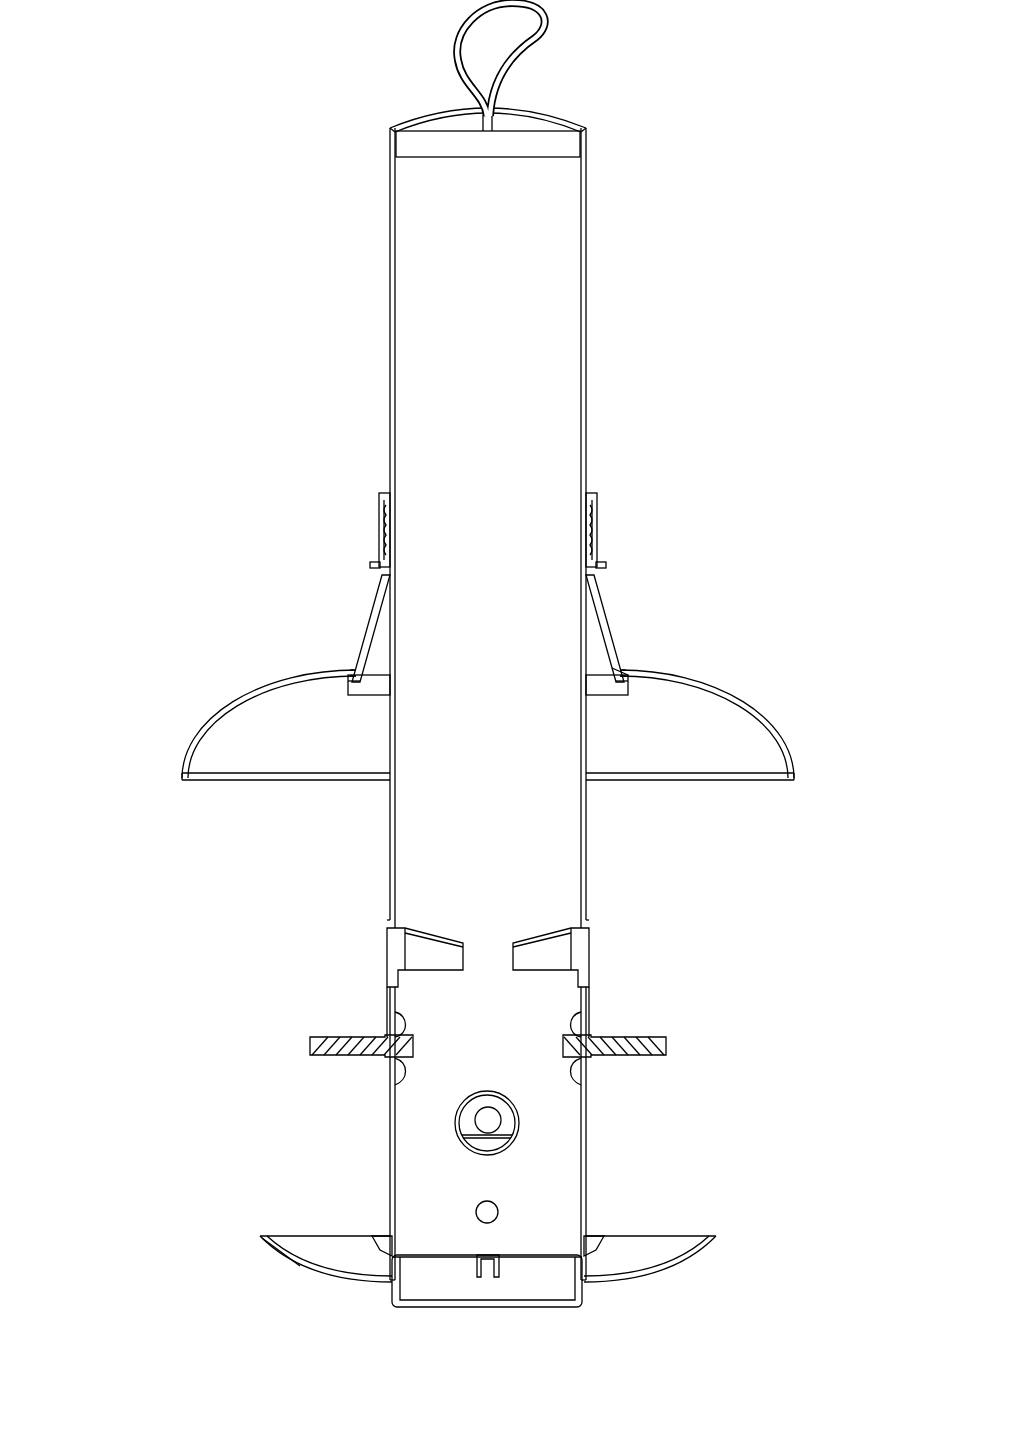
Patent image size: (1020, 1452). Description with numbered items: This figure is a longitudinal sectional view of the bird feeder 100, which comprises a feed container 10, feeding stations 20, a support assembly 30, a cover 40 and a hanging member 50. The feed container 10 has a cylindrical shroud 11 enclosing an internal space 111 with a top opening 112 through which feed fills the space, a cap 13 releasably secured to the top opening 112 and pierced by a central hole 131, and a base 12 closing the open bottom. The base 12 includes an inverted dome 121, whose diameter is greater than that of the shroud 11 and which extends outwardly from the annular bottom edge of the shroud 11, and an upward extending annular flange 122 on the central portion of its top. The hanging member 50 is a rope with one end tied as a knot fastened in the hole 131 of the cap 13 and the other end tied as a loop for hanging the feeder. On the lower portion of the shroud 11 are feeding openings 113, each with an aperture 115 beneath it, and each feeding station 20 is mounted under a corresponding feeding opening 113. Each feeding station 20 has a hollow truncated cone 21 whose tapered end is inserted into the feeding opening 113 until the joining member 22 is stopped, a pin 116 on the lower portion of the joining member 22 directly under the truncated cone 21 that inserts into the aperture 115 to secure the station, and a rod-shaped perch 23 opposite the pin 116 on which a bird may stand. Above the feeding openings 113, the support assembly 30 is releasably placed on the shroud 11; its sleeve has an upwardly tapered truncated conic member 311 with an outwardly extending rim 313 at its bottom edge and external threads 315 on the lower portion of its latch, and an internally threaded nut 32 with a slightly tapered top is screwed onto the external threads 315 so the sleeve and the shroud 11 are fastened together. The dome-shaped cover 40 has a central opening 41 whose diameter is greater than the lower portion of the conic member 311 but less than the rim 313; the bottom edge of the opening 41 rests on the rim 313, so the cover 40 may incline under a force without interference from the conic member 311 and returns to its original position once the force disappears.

The bird feeder 100 is at (162, 130).
The feed container 10 is at (250, 315).
The cylindrical shroud 11 is at (390, 295).
The internal space 111 is at (553, 350).
The top opening 112 is at (440, 132).
The feeding opening 113 is at (420, 962).
The aperture 115 is at (400, 1085).
The pin 116 is at (400, 1020).
The base 12 is at (672, 1275).
The inverted dome 121 is at (302, 1268).
The annular flange 122 is at (395, 1262).
The cap 13 is at (440, 120).
The hole 131 is at (492, 117).
The hanging member 50 is at (540, 35).
The support assembly 30 is at (657, 478).
The internally threaded nut 32 is at (592, 542).
The external threads 315 is at (385, 545).
The truncated conic member 311 is at (375, 615).
The rim 313 is at (635, 680).
The cover 40 is at (272, 683).
The central opening 41 is at (620, 655).
The feeding station 20 is at (745, 873).
The truncated cone 21 is at (548, 937).
The joining member 22 is at (590, 1014).
The perch 23 is at (640, 1053).